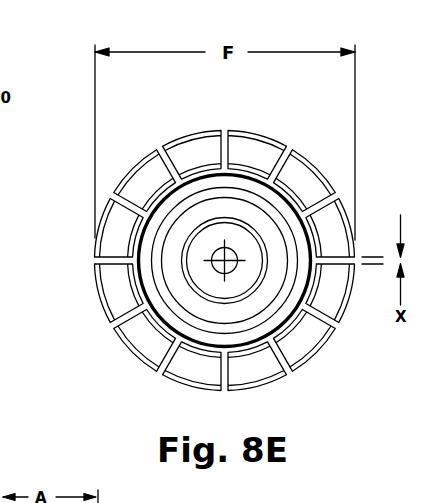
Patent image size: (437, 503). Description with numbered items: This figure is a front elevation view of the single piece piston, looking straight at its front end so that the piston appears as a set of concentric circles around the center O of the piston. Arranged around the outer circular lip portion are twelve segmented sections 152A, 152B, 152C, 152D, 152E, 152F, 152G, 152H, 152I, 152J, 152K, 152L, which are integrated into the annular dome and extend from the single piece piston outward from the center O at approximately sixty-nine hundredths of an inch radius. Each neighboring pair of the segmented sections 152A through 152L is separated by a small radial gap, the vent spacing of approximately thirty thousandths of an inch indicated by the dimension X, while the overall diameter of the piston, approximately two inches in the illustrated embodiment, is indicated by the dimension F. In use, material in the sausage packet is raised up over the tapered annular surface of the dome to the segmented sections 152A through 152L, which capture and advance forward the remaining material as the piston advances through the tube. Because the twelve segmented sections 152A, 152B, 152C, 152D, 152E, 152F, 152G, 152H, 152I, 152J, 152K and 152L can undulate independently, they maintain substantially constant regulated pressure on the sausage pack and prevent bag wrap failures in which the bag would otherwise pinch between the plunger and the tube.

The center of the piston O is at (216, 251).
The segmented section 152A is at (148, 334).
The segmented section 152B is at (114, 296).
The segmented section 152C is at (113, 238).
The segmented section 152D is at (150, 173).
The segmented section 152E is at (205, 148).
The segmented section 152F is at (257, 152).
The segmented section 152G is at (298, 180).
The segmented section 152H is at (328, 228).
The segmented section 152I is at (330, 293).
The segmented section 152J is at (290, 338).
The segmented section 152K is at (259, 371).
The segmented section 152L is at (200, 372).